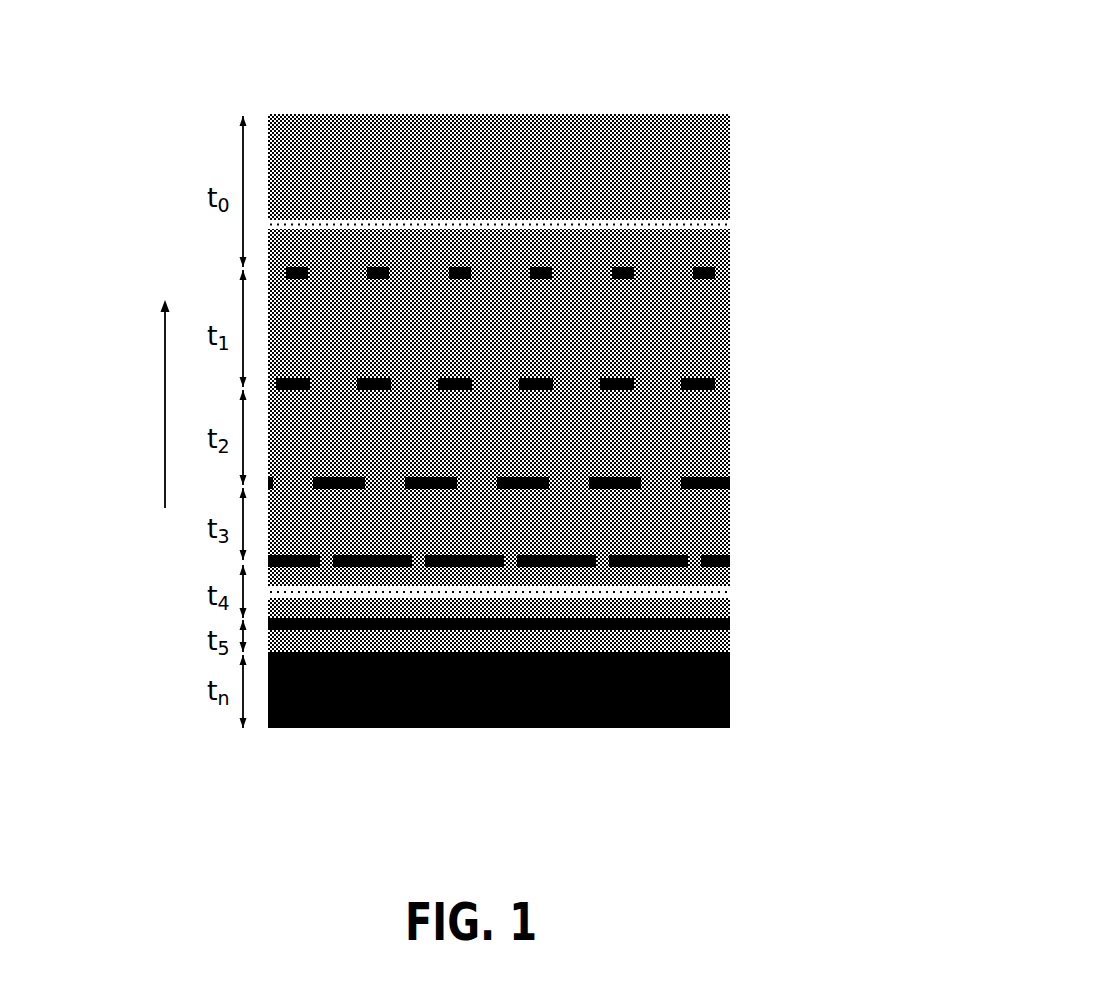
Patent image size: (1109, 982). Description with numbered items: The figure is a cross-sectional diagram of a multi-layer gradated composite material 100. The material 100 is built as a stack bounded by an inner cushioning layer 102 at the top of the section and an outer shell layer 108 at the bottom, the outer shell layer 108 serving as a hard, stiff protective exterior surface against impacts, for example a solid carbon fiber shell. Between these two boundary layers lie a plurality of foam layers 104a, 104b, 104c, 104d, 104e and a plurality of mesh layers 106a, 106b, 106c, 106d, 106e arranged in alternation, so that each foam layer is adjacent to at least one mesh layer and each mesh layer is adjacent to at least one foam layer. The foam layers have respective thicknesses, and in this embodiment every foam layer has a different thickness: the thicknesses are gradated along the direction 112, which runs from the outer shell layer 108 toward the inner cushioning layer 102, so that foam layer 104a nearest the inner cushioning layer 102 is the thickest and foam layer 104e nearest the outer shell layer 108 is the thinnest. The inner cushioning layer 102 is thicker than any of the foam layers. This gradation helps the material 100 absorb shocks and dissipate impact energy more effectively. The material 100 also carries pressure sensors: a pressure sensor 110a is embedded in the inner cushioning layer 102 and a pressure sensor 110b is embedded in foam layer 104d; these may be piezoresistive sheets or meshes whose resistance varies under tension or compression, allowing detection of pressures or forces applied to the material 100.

The multi-layer gradated composite material 100 is at (678, 56).
The inner cushioning layer 102 is at (360, 114).
The foam layer 104a is at (733, 327).
The foam layer 104b is at (730, 430).
The foam layer 104c is at (730, 518).
The foam layer 104d is at (730, 578).
The foam layer 104e is at (730, 641).
The mesh layer 106a is at (715, 272).
The mesh layer 106b is at (725, 383).
The mesh layer 106c is at (728, 478).
The mesh layer 106d is at (728, 556).
The mesh layer 106e is at (733, 623).
The outer shell layer 108 is at (380, 728).
The pressure sensor 110a is at (693, 228).
The pressure sensor 110b is at (710, 592).
The direction 112 is at (163, 391).